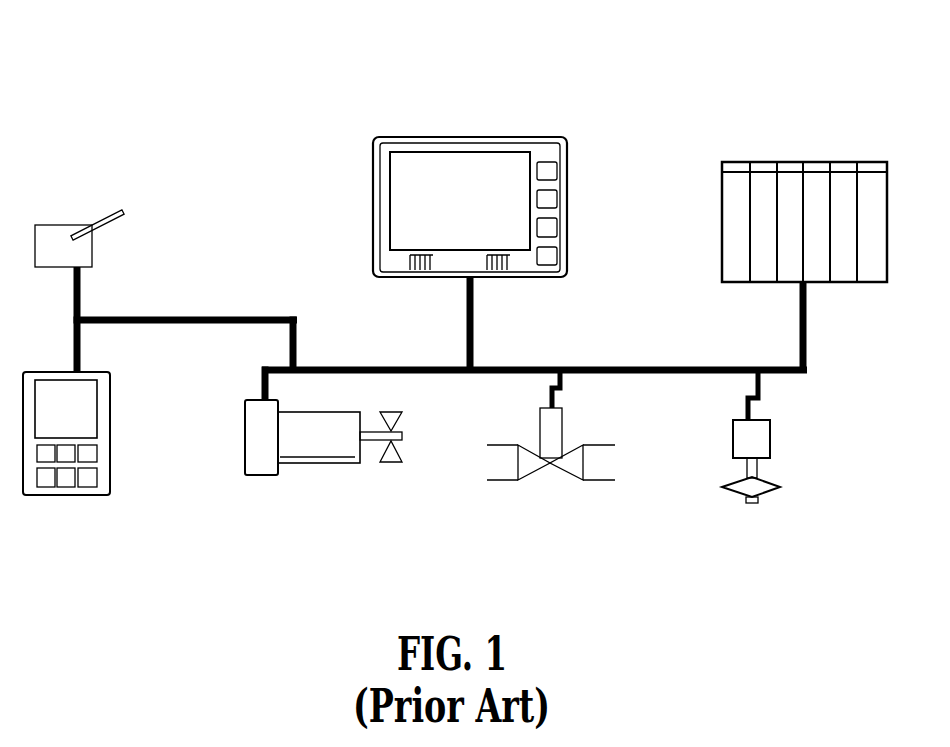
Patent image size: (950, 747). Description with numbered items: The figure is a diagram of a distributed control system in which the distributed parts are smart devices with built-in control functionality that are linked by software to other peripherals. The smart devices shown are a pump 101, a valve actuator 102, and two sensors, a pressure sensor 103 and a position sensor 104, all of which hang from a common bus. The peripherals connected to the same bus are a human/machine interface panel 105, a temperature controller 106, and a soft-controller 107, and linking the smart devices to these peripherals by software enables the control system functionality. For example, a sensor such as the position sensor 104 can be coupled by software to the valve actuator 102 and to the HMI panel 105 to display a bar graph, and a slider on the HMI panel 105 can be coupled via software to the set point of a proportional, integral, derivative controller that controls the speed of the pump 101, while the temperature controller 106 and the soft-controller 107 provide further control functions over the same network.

The pump 101 is at (258, 475).
The valve actuator 102 is at (498, 480).
The sensor 103 is at (737, 495).
The position sensor 104 is at (53, 225).
The human/machine interface (HMI) panel 105 is at (440, 137).
The temperature controller 106 is at (32, 495).
The soft-controller 107 is at (755, 162).